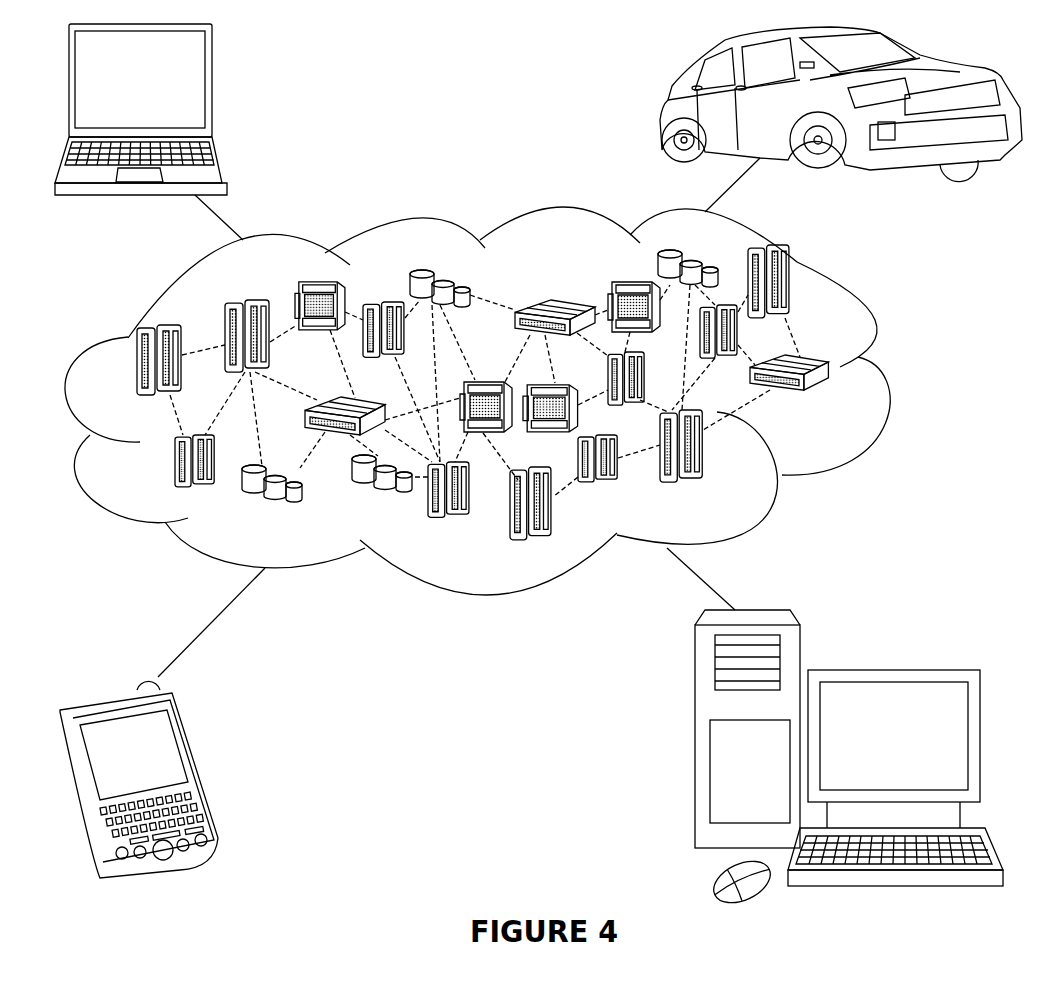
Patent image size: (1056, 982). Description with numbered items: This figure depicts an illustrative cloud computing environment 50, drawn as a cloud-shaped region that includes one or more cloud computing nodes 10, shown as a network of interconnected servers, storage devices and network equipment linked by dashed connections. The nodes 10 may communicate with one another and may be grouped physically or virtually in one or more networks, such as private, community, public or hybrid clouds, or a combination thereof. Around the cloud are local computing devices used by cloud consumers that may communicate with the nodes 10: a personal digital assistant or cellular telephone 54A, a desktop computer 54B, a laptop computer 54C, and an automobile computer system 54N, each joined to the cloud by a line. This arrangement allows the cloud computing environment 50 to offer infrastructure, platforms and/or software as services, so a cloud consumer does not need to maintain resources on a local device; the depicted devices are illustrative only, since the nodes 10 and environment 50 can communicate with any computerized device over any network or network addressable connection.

The cloud computing node 10 is at (829, 401).
The cloud computing environment 50 is at (890, 371).
The personal digital assistant or cellular telephone 54A is at (203, 767).
The desktop computer 54B is at (890, 668).
The laptop computer 54C is at (212, 88).
The automobile computer system 54N is at (664, 106).